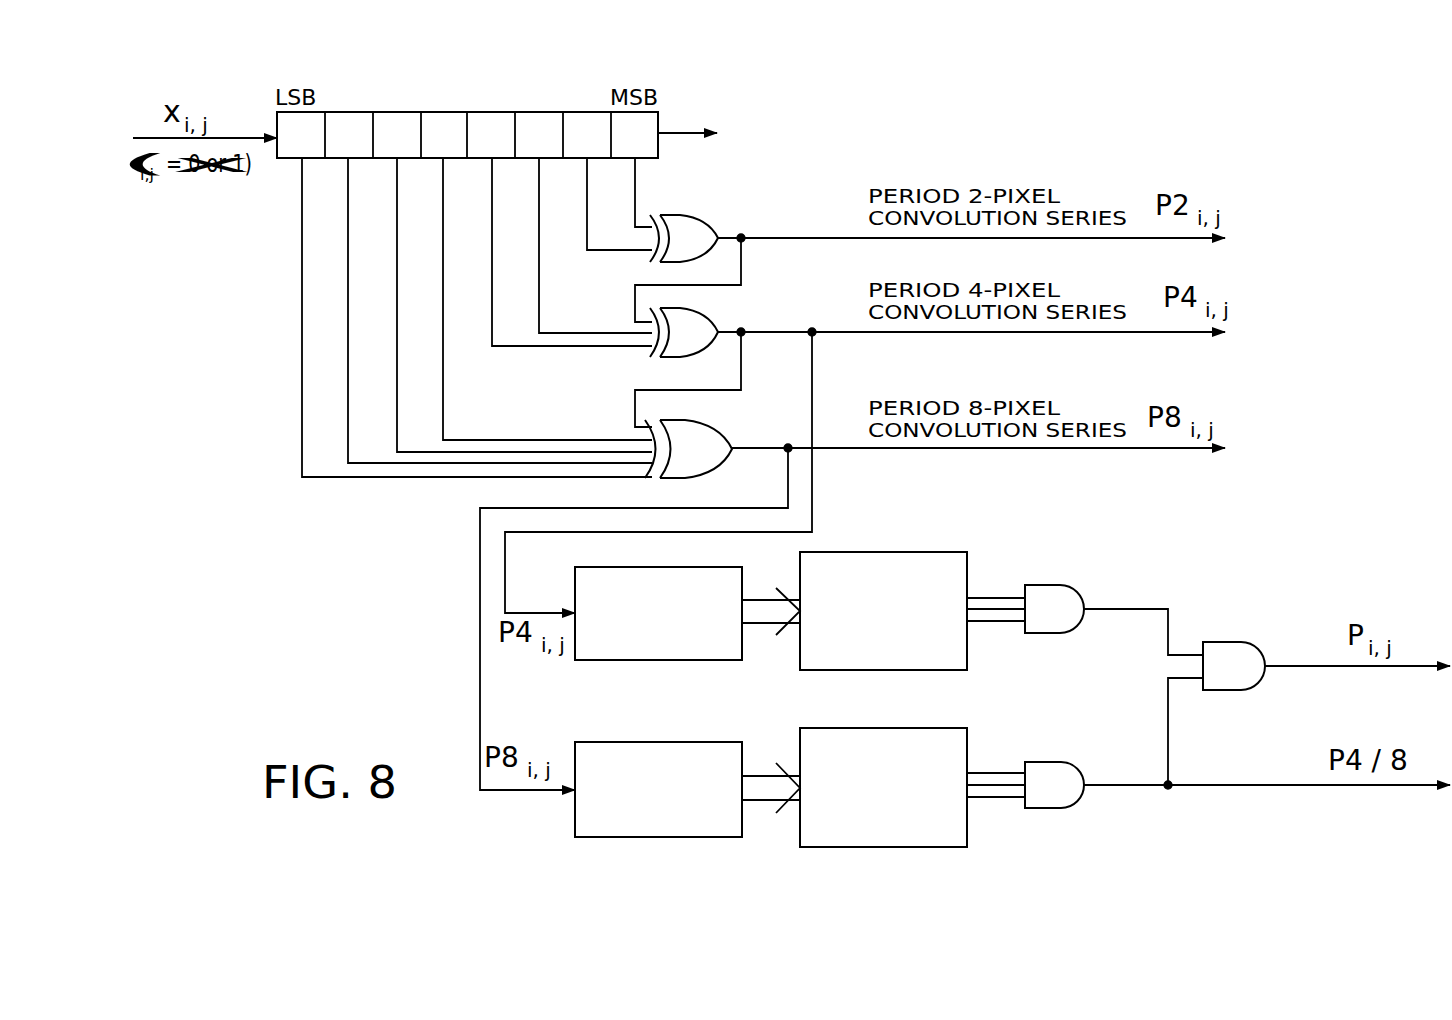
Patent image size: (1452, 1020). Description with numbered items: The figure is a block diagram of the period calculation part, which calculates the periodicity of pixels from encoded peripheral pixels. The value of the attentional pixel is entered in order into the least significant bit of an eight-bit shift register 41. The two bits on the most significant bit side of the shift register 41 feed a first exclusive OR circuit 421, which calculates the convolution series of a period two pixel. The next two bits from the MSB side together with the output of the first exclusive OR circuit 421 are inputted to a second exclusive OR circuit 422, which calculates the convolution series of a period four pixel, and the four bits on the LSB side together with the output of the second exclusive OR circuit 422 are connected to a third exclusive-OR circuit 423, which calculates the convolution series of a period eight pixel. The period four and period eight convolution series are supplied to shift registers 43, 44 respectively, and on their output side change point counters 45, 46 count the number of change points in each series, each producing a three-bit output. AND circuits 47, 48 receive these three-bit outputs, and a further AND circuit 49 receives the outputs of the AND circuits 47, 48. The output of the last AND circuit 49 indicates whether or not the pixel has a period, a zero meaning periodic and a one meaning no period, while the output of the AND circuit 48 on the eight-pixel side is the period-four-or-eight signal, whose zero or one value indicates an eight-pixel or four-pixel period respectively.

The 8-bit shift register 41 is at (282, 177).
The first exclusive OR circuit 421 is at (708, 222).
The second exclusive OR circuit 422 is at (710, 318).
The third exclusive-OR circuit 423 is at (715, 437).
The shift register 43 is at (582, 648).
The shift register 44 is at (582, 815).
The change point counter 45 is at (940, 558).
The change point counter 46 is at (968, 736).
The AND circuit 47 is at (1067, 598).
The AND circuit 48 is at (1063, 772).
The AND circuit 49 is at (1217, 650).